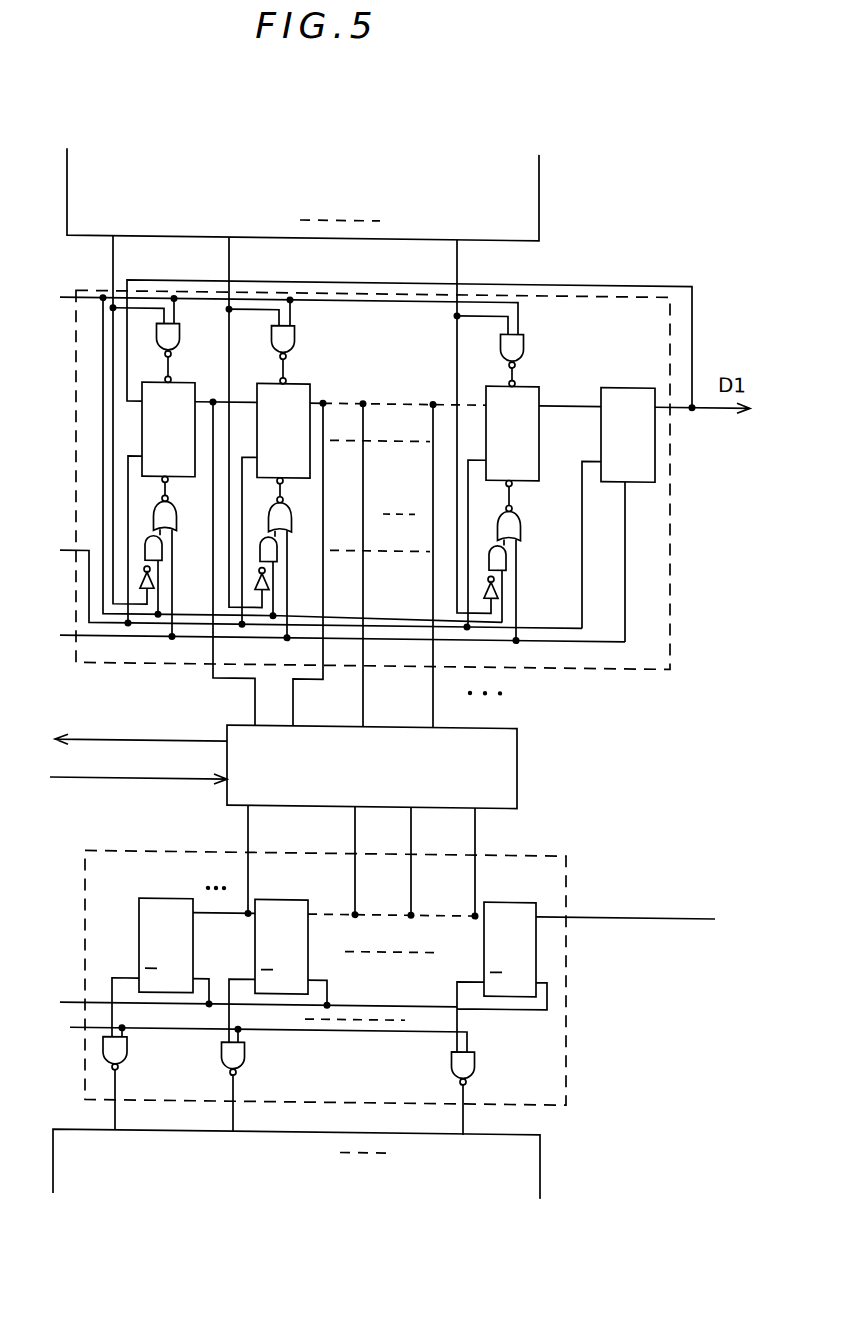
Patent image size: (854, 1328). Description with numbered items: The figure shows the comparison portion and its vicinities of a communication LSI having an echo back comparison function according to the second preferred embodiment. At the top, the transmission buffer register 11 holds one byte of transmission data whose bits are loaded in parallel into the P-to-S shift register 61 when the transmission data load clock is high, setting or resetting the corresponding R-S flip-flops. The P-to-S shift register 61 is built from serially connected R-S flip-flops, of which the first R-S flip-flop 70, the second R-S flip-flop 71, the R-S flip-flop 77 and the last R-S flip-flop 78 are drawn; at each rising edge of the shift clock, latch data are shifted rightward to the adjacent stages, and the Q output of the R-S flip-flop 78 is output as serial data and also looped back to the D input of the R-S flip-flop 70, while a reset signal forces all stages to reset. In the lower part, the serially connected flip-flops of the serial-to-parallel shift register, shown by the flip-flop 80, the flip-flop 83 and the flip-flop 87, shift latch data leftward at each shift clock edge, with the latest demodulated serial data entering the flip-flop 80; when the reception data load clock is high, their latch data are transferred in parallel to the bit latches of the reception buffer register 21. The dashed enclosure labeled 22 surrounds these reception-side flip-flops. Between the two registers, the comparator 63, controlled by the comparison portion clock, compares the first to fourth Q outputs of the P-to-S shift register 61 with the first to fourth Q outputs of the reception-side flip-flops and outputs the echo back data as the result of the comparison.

The transmission buffer register 11 is at (539, 204).
The P-to-S shift register 61 is at (590, 291).
The R-S flip-flop 70 is at (184, 385).
The R-S flip-flop 71 is at (300, 385).
The R-S flip-flop 77 is at (528, 385).
The R-S flip-flop 78 is at (650, 372).
The comparator 63 is at (517, 754).
The counter (toggle flip-flop circuit) 22 is at (566, 874).
The flip-flop 87 is at (155, 900).
The flip-flop 83 is at (272, 900).
The flip-flop 80 is at (497, 900).
The reception buffer register 21 is at (540, 1169).